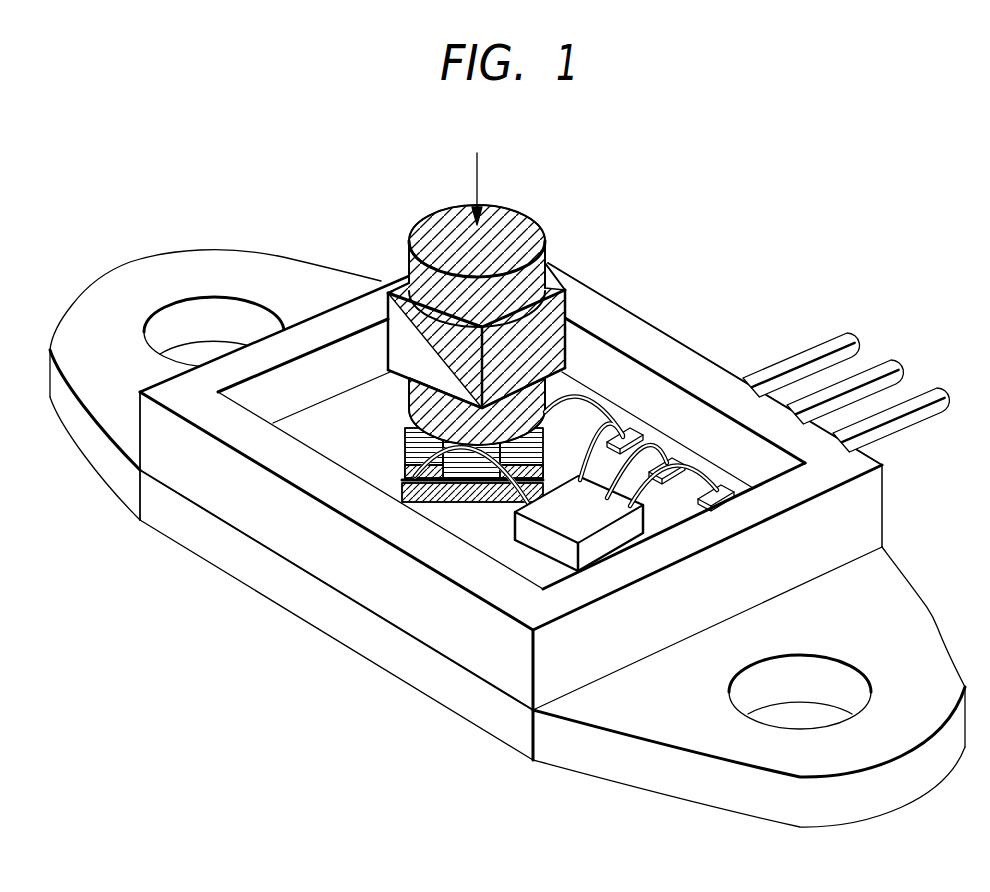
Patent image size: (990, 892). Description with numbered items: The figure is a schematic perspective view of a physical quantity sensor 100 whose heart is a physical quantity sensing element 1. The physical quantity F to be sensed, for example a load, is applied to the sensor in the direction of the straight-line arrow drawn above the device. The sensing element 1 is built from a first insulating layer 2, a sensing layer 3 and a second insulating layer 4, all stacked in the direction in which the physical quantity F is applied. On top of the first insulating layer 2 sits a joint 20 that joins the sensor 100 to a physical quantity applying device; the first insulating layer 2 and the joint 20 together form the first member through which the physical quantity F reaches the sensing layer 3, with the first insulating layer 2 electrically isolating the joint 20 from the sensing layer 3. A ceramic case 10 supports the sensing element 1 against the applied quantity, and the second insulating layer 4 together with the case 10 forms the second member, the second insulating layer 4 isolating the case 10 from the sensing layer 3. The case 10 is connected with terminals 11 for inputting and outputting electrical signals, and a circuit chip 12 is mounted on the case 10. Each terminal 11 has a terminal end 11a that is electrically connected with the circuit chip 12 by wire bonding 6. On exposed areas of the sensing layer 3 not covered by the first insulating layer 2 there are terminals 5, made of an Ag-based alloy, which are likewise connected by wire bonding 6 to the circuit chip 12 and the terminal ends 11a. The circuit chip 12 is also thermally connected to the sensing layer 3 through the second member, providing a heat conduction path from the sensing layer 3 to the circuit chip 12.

The physical quantity sensor 100 is at (607, 243).
The case 10 is at (83, 310).
The physical quantity sensing element 1 is at (350, 212).
The first insulating layer 2 is at (406, 442).
The sensing layer 3 is at (404, 490).
The second insulating layer 4 is at (403, 505).
The terminals 5 is at (440, 500).
The joint 20 is at (440, 222).
The physical quantity F is at (482, 185).
The circuit chip 12 is at (552, 520).
The wire bonding 6 is at (662, 456).
The terminal end 11a is at (633, 428).
The terminals 11 is at (822, 343).